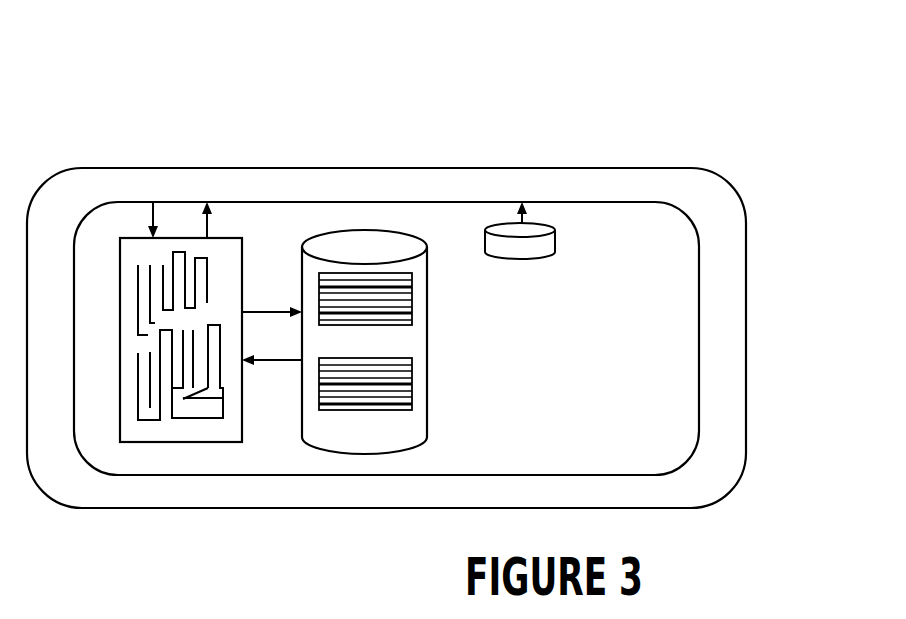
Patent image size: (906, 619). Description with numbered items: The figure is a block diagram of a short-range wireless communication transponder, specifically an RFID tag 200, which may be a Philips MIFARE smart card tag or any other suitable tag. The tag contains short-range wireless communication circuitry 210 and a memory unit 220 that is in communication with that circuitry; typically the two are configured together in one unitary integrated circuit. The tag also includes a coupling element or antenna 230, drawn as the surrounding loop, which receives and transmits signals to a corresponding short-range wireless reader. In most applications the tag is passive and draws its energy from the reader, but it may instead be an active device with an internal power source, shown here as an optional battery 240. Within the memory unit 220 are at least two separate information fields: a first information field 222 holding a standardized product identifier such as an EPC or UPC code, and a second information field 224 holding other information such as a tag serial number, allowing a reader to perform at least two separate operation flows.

The RFID tag 200 is at (614, 85).
The short-range wireless communication circuitry 210 is at (183, 428).
The memory unit 220 is at (367, 430).
The first information field 222 is at (412, 312).
The second information field 224 is at (412, 387).
The antenna 230 is at (699, 285).
The optional battery 240 is at (555, 230).